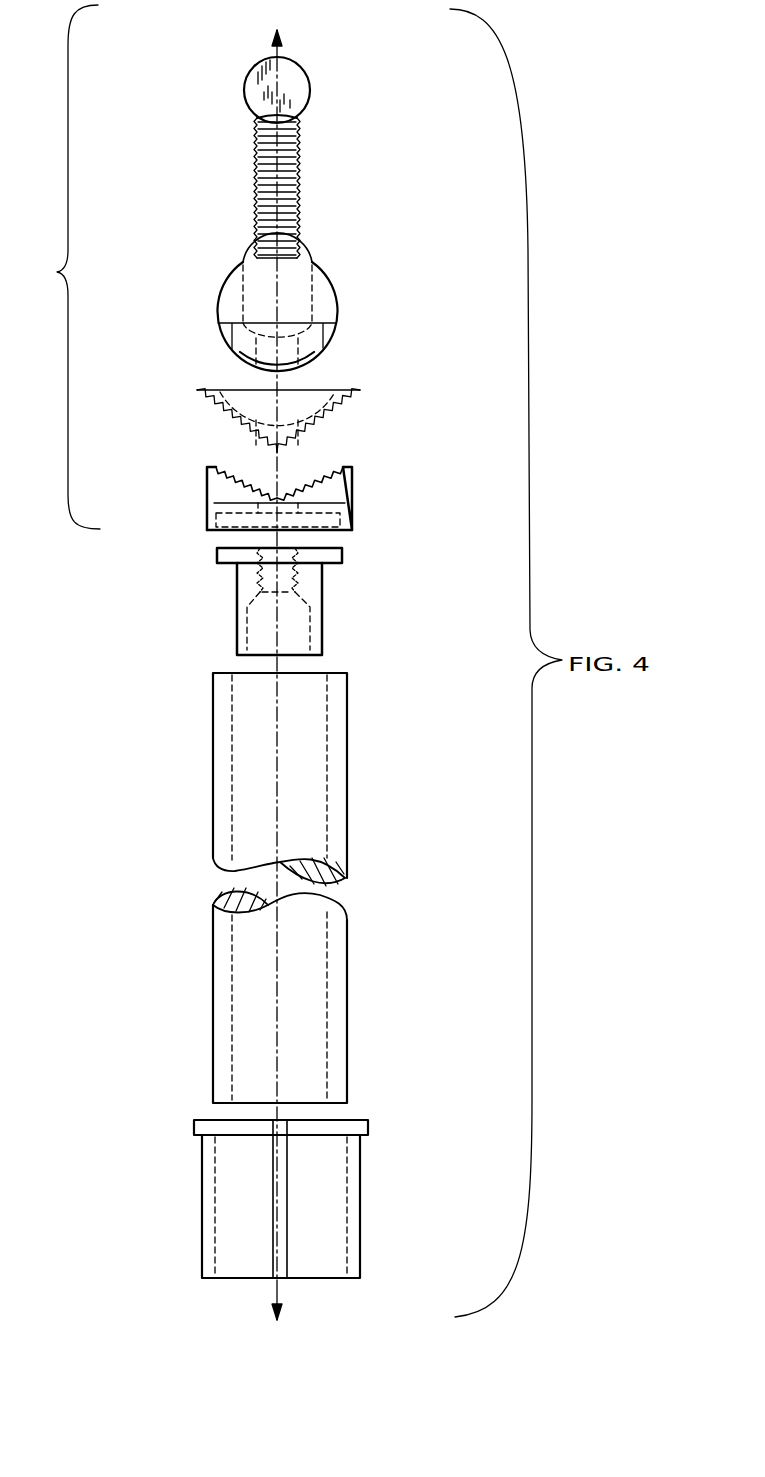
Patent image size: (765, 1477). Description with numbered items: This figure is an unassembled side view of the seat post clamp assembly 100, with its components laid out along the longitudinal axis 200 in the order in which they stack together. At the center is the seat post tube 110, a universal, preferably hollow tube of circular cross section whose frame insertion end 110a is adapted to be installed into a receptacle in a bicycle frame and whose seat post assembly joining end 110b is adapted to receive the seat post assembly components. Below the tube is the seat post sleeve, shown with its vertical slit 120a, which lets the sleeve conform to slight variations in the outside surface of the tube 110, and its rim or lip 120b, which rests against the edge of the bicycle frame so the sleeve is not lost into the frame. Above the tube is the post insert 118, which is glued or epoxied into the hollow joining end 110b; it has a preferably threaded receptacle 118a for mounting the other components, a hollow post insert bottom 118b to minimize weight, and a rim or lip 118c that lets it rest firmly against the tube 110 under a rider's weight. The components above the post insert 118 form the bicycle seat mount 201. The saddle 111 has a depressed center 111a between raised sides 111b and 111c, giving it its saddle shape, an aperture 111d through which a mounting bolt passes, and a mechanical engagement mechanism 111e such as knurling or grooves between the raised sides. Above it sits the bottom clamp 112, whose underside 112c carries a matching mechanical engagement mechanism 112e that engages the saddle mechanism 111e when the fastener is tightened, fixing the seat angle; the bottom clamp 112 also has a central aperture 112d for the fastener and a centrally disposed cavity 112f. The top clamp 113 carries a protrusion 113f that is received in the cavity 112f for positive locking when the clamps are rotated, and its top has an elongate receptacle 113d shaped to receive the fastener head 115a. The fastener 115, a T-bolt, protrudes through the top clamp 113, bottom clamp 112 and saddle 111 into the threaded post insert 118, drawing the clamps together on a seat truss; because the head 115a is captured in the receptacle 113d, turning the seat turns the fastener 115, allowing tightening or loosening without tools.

The seat post clamp assembly 100 is at (176, 795).
The seat post tube 110 is at (348, 887).
The frame insertion end 110a is at (347, 1093).
The seat post assembly joining end 110b is at (295, 683).
The saddle 111 is at (288, 482).
The depressed center 111a is at (297, 487).
The raised side 111b is at (352, 523).
The raised side 111c is at (215, 484).
The aperture 111d is at (235, 504).
The mechanical engagement mechanism 111e is at (240, 480).
The bottom clamp 112 is at (291, 396).
The underside of bottom clamp 112c is at (218, 425).
The aperture of bottom clamp 112d is at (318, 388).
The mechanical engagement mechanism 112e is at (318, 442).
The centrally disposed cavity 112f is at (240, 392).
The top clamp 113 is at (325, 293).
The elongate receptacle 113d is at (247, 282).
The protrusion 113f is at (313, 360).
The fastener 115 is at (321, 157).
The fastener head 115a is at (295, 100).
The post insert 118 is at (332, 595).
The receptacle 118a is at (296, 578).
The post insert bottom 118b is at (280, 628).
The rim or lip of post insert 118c is at (342, 553).
The vertical slit 120a is at (273, 1120).
The rim or lip of sleeve 120b is at (194, 1128).
The longitudinal axis 200 is at (277, 675).
The bicycle seat mount 201 is at (62, 267).